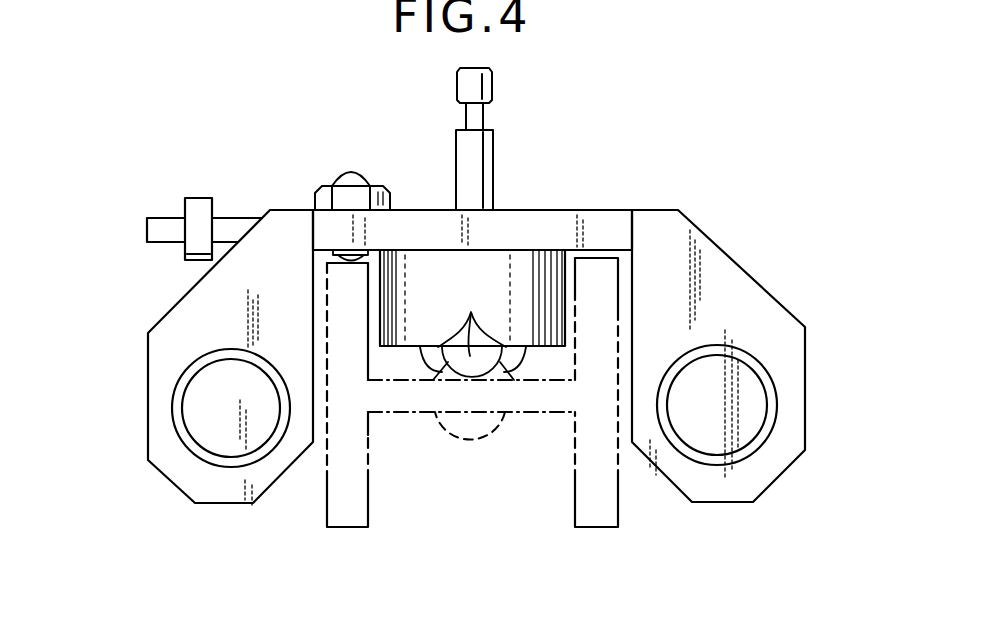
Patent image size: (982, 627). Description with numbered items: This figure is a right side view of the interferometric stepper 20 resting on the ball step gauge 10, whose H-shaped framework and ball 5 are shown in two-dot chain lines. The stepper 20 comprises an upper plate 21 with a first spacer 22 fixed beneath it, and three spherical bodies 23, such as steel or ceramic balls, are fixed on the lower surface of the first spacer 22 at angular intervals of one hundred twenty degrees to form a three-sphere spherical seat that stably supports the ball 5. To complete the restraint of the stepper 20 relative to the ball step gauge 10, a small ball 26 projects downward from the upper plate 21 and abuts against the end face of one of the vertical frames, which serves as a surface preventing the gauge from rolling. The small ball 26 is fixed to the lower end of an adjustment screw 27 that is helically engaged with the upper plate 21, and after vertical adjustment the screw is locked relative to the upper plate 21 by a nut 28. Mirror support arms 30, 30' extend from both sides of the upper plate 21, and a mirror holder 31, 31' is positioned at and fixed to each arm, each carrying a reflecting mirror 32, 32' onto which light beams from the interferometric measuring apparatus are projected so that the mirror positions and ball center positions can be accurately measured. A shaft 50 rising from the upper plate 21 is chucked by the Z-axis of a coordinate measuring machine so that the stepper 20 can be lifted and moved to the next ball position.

The ball 5 is at (484, 440).
The ball step gauge 10 is at (578, 490).
The interferometric stepper 20 is at (639, 160).
The upper plate 21 is at (560, 210).
The first spacer 22 is at (425, 267).
The spherical bodies 23 is at (471, 313).
The small ball 26 is at (354, 282).
The adjustment screw 27 is at (351, 263).
The nut 28 is at (371, 183).
The mirror support arm 30 is at (194, 357).
The mirror holder 31 is at (183, 408).
The reflecting mirror 32 is at (178, 408).
The mirror support arm 30' is at (757, 356).
The mirror holder 31' is at (769, 390).
The reflecting mirror 32' is at (774, 405).
The shaft 50 is at (493, 156).